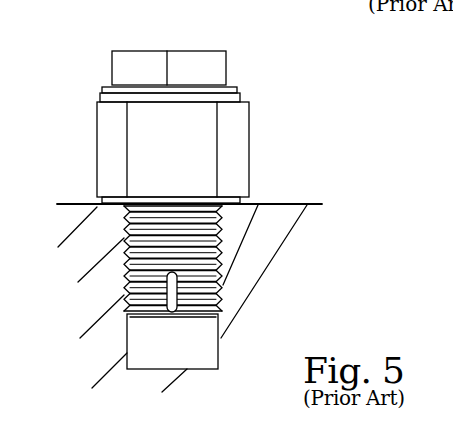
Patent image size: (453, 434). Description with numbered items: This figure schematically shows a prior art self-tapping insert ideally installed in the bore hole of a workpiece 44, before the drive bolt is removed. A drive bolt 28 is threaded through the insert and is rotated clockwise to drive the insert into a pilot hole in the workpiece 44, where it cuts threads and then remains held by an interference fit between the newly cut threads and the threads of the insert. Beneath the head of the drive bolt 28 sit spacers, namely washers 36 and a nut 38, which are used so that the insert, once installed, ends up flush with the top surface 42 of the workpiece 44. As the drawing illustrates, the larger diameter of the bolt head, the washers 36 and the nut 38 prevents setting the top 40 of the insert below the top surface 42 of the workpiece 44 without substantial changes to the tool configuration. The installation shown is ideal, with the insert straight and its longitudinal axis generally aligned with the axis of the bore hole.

The drive bolt 28 is at (180, 50).
The washers 36 is at (101, 97).
The nut 38 is at (97, 157).
The top of the insert 40 is at (215, 196).
The top surface of the workpiece 42 is at (292, 203).
The workpiece 44 is at (242, 291).